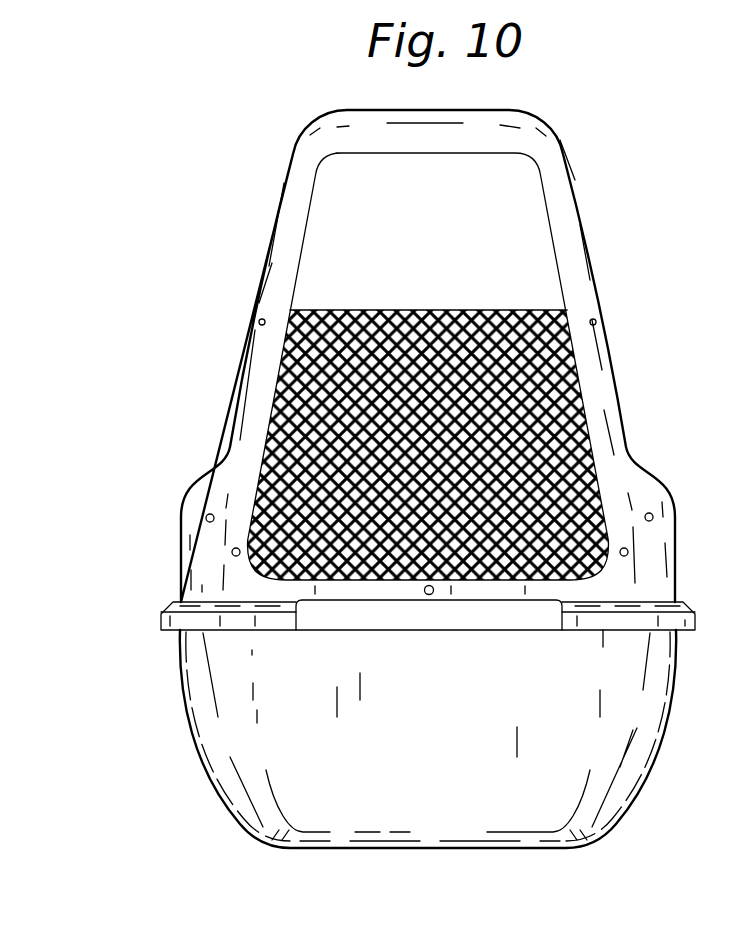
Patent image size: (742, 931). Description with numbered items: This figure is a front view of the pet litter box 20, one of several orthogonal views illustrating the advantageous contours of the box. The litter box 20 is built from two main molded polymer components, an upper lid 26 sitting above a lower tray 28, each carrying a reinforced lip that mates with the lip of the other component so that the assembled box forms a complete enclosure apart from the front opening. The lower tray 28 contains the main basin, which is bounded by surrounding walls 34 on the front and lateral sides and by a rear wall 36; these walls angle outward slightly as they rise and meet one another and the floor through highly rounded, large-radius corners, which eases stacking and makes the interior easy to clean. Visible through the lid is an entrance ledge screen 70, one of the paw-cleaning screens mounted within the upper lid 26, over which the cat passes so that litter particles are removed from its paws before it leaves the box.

The pet litter box 20 is at (618, 103).
The upper lid 26 is at (238, 369).
The lower tray 28 is at (237, 832).
The surrounding walls 34 is at (640, 781).
The rear wall 36 is at (450, 749).
The entrance ledge screen 70 is at (550, 383).